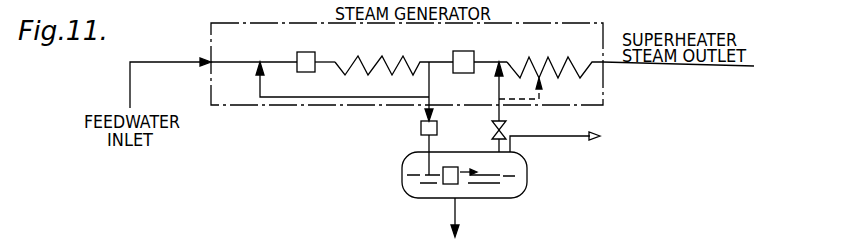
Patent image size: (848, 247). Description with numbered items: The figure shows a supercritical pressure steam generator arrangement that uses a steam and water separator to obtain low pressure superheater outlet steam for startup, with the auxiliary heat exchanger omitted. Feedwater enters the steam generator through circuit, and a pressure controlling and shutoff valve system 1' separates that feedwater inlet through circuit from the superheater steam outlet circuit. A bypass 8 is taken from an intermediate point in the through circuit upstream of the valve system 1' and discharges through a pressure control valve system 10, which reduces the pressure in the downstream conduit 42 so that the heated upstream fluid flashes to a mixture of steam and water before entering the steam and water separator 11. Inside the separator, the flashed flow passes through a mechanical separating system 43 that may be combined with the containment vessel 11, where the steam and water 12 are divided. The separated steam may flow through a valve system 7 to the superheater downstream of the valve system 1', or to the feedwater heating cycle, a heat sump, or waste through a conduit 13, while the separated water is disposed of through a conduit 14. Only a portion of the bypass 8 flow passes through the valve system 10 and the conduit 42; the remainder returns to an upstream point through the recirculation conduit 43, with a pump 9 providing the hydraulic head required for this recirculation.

The pump 9 is at (305, 52).
The pressure controlling and shutoff valve system 1' is at (476, 50).
The recirculation conduit and steam-water separating system 43 is at (388, 99).
The bypass 8 is at (430, 85).
The pressure control valve system 10 is at (438, 126).
The downstream conduit 42 is at (428, 143).
The valve system 7 is at (508, 128).
The conduit 13 is at (575, 136).
The steam and water separator 11 is at (518, 154).
The water 12 is at (510, 178).
The conduit 14 is at (457, 217).